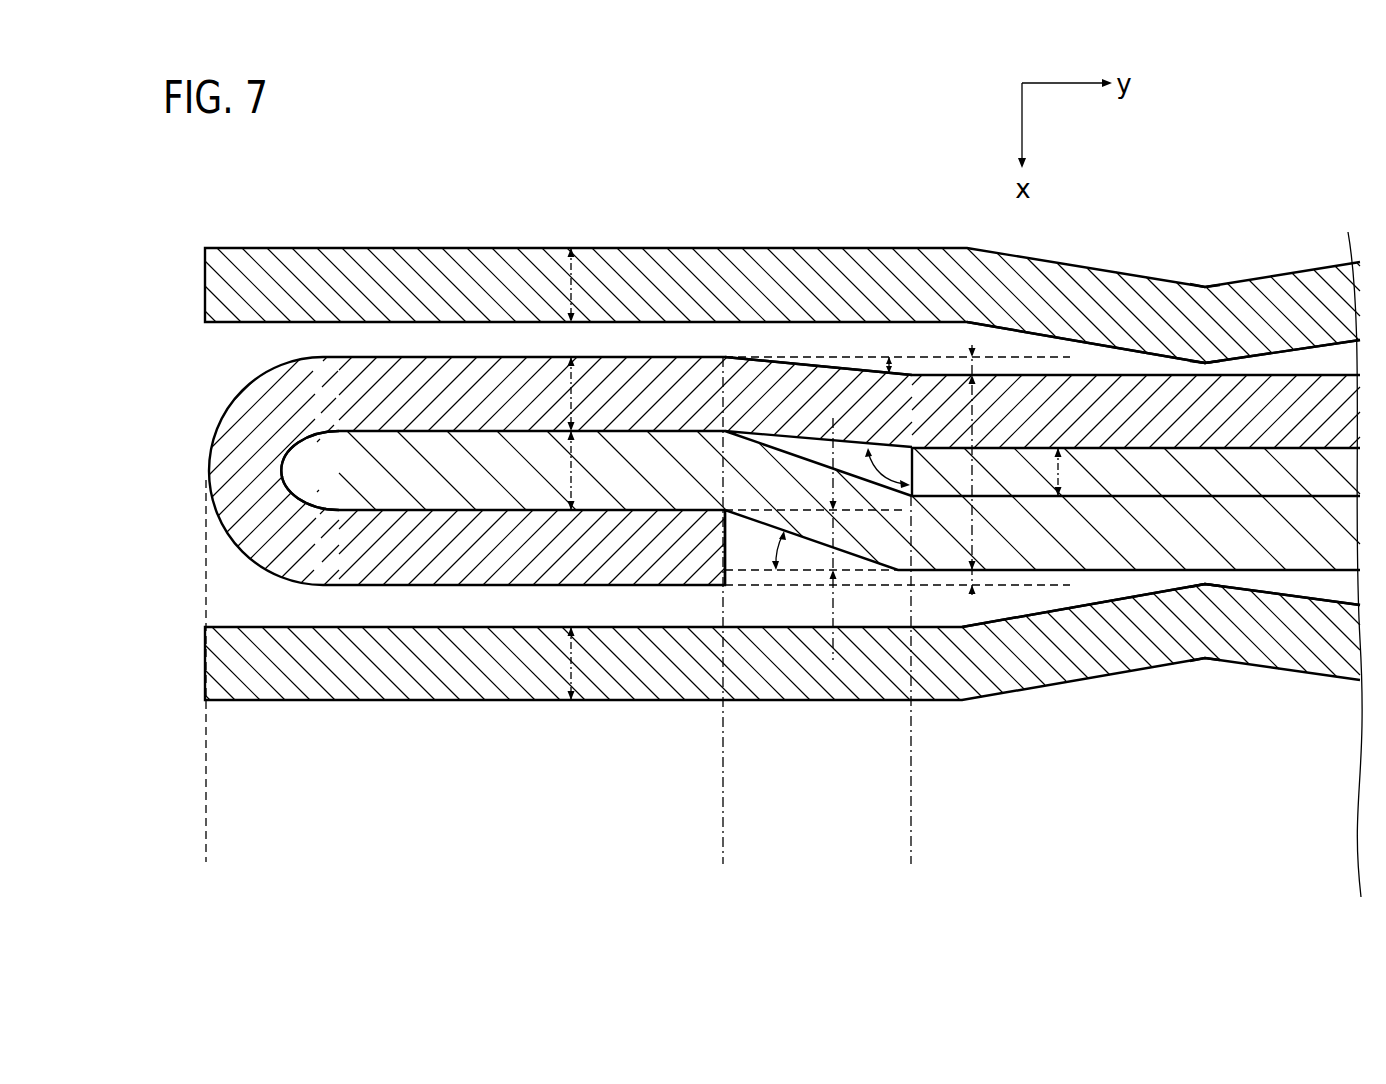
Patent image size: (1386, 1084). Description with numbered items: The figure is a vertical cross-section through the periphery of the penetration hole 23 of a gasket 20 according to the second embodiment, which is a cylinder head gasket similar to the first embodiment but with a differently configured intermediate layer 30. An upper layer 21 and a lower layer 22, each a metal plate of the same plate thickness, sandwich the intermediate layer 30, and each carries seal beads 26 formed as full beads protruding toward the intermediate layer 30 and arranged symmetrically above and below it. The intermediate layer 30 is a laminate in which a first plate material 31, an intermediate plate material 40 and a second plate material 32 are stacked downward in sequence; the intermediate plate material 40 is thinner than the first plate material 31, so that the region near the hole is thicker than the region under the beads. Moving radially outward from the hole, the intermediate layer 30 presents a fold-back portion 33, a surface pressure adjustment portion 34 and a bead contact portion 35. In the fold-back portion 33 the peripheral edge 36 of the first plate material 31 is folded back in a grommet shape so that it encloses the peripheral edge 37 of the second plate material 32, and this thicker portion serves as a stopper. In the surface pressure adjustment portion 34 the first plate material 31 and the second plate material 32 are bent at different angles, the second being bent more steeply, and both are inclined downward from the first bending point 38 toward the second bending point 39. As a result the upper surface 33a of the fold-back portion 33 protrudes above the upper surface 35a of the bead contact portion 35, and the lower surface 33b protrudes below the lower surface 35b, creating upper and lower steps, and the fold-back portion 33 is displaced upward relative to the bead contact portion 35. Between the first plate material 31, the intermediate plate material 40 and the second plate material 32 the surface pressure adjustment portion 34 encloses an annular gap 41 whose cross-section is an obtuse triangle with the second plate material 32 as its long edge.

The gasket 20 is at (757, 178).
The upper layer 21 is at (205, 284).
The lower layer 22 is at (205, 655).
The penetration hole 23 is at (108, 392).
The seal beads 26 is at (1205, 287).
The intermediate layer 30 is at (195, 352).
The first plate material 31 is at (1085, 412).
The second plate material 32 is at (1085, 545).
The fold-back portion 33 is at (206, 864).
The upper surface of the fold-back portion 33a is at (453, 357).
The lower surface of the fold-back portion 33b is at (455, 583).
The surface pressure adjustment portion 34 is at (911, 864).
The bead contact portion 35 is at (1358, 881).
The upper surface of the bead contact portion 35a is at (1133, 355).
The lower surface of the bead contact portion 35b is at (1140, 596).
The peripheral edge 36 is at (730, 556).
The peripheral edge 37 is at (326, 465).
The first bending point 38 is at (724, 356).
The second bending point 39 is at (911, 470).
The intermediate plate material 40 is at (1263, 477).
The gap 41 is at (851, 446).